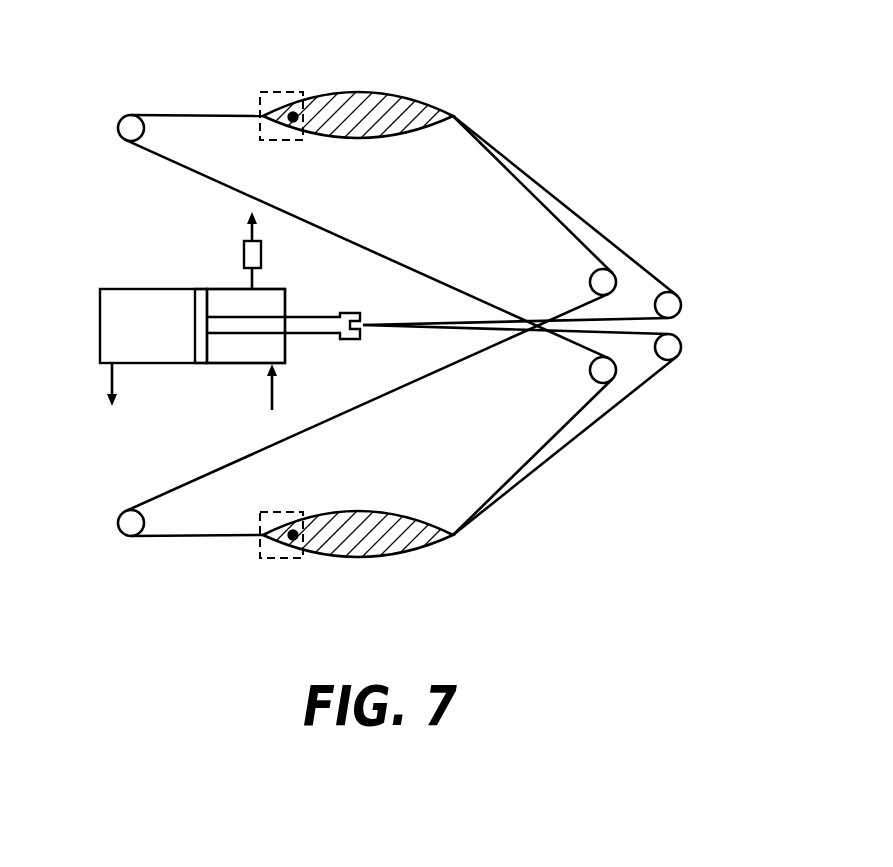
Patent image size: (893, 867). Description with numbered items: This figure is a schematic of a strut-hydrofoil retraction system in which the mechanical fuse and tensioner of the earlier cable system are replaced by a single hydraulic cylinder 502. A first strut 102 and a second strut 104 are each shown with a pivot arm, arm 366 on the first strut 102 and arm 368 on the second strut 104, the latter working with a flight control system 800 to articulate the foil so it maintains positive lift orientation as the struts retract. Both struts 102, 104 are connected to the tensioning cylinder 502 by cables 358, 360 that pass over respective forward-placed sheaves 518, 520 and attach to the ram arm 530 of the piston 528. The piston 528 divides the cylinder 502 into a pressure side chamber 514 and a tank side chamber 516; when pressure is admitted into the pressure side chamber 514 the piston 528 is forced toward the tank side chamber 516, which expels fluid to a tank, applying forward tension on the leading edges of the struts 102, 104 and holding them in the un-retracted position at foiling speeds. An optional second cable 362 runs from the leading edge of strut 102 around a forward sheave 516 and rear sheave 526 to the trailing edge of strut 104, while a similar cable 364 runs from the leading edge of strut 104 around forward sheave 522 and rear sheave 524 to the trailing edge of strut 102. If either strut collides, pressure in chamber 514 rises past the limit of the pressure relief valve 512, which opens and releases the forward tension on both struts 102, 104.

The first strut 102 is at (354, 558).
The second strut 104 is at (351, 92).
The cable 358 is at (613, 412).
The cable 360 is at (620, 240).
The second cable 362 is at (533, 458).
The second cable 364 is at (530, 195).
The arm 366 is at (290, 539).
The arm 368 is at (290, 113).
The hydraulic cylinder 502 is at (157, 364).
The pressure relief valve 512 is at (244, 256).
The pressure side chamber 514 is at (272, 297).
The tank side chamber 516 is at (590, 370).
The forward-placed sheave 518 is at (681, 348).
The forward-placed sheave 520 is at (681, 305).
The forward sheave 522 is at (590, 282).
The rear sheave 524 is at (118, 522).
The rear sheave 526 is at (118, 128).
The piston 528 is at (206, 292).
The ram arm 530 is at (308, 333).
The flight control system 800 is at (279, 142).